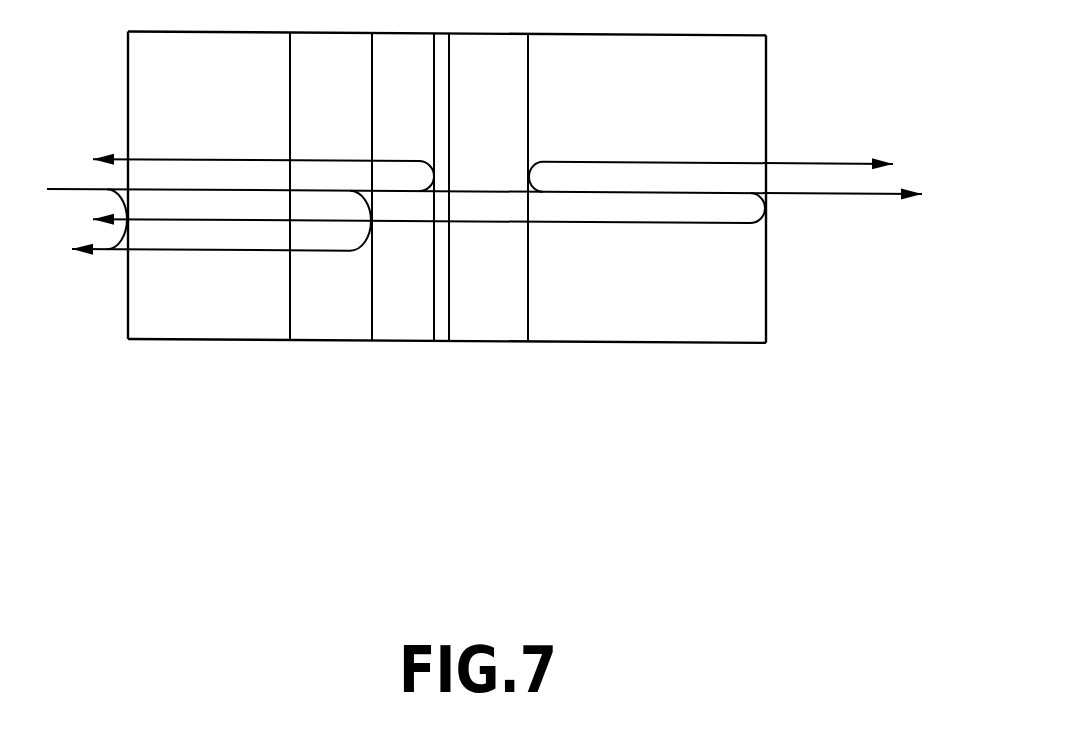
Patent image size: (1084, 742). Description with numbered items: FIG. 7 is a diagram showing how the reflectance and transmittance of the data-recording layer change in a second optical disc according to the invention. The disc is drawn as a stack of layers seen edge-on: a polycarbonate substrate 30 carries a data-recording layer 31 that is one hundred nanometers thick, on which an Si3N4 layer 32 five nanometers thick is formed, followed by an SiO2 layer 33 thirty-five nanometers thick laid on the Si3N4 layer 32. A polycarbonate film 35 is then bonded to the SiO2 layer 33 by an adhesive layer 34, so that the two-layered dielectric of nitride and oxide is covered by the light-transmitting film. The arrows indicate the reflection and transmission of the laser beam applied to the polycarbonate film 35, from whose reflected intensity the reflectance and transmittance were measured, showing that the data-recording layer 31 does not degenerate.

The polycarbonate substrate 30 is at (673, 330).
The data-recording layer 31 is at (511, 330).
The Si3N4 layer 32 is at (441, 330).
The SiO2 layer 33 is at (385, 330).
The adhesive layer 34 is at (313, 330).
The polycarbonate film 35 is at (209, 330).